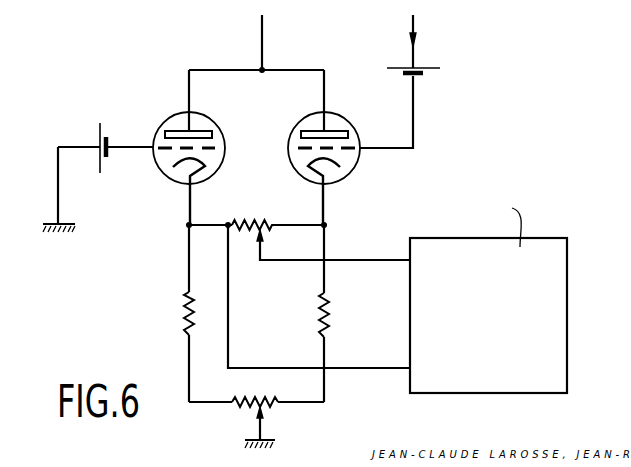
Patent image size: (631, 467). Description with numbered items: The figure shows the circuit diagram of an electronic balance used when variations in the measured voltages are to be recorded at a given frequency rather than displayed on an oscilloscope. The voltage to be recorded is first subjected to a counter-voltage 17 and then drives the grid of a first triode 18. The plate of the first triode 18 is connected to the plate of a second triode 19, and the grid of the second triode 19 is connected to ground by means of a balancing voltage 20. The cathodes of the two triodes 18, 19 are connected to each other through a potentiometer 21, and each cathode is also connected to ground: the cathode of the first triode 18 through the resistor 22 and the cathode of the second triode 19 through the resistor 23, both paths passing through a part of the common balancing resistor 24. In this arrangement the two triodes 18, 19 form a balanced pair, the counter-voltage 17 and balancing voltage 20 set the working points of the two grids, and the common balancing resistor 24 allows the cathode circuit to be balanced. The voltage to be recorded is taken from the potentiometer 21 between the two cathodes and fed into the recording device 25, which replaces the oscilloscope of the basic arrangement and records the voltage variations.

The counter-voltage 17 is at (433, 71).
The first triode 18 is at (352, 125).
The second triode 19 is at (237, 111).
The balancing voltage 20 is at (100, 140).
The potentiometer 21 is at (238, 222).
The resistor 22 is at (327, 317).
The resistor 23 is at (183, 319).
The common balancing resistor 24 is at (246, 420).
The recording device 25 is at (495, 326).